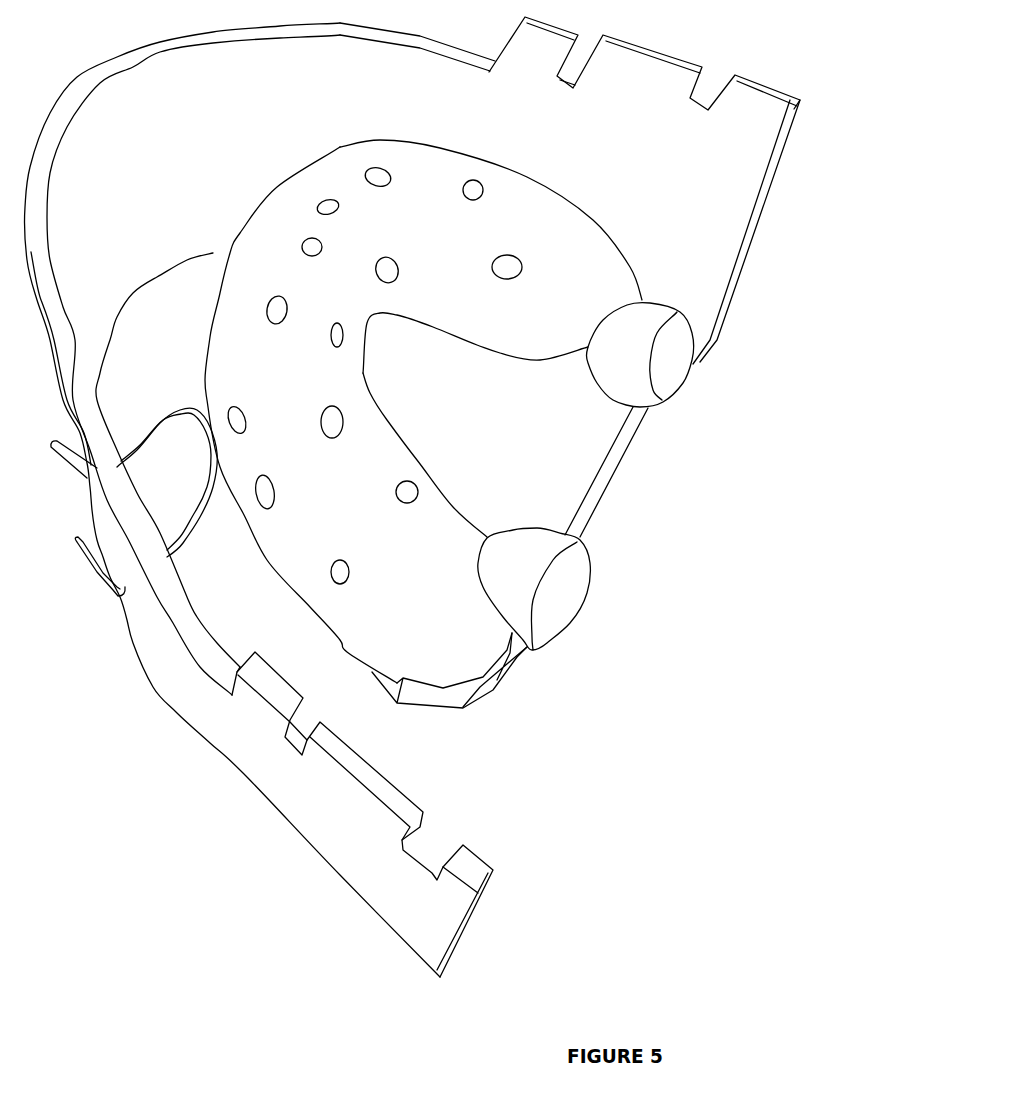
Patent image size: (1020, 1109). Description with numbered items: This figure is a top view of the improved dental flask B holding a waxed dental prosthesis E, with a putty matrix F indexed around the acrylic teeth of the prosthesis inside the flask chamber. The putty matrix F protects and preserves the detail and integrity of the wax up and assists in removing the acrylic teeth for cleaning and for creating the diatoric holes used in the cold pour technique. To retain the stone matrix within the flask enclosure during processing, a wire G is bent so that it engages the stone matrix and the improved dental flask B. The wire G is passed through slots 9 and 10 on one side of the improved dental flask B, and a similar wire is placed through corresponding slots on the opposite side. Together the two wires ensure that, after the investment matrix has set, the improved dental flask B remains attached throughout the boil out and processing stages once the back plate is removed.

The improved dental flask B is at (433, 797).
The waxed dental prosthesis E is at (625, 507).
The putty matrix F is at (617, 202).
The wire G is at (207, 537).
The slot 9 is at (82, 490).
The slot 10 is at (108, 605).